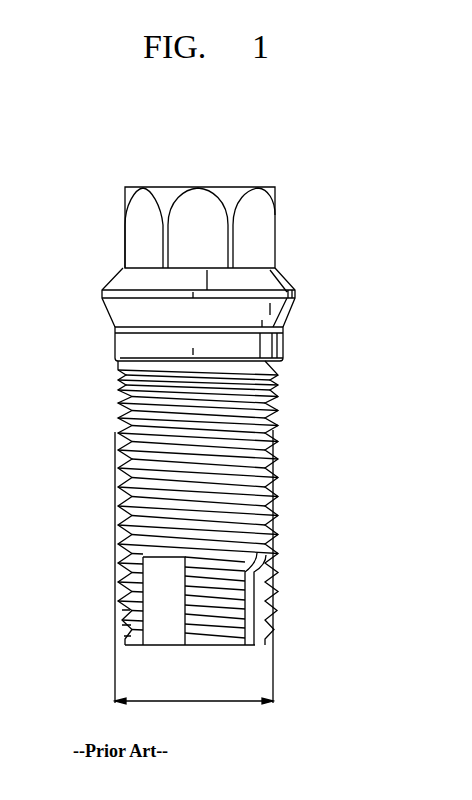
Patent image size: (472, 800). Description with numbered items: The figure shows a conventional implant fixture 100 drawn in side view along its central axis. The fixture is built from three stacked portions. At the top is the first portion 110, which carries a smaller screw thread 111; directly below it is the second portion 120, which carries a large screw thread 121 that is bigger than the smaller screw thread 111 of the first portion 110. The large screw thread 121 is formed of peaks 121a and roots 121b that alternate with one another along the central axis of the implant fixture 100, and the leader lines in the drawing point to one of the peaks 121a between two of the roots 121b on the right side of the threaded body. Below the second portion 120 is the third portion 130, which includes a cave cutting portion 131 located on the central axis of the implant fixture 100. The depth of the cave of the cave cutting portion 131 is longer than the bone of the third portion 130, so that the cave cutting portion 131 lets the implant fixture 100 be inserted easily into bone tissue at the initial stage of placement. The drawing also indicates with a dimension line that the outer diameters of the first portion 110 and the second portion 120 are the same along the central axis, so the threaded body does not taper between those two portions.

The implant fixture 100 is at (333, 189).
The first portion 110 is at (285, 372).
The smaller screw thread 111 is at (120, 365).
The second portion 120 is at (289, 508).
The large screw thread 121 is at (118, 503).
The peaks 121a is at (277, 459).
The roots 121b is at (277, 445).
The third portion 130 is at (288, 610).
The cave cutting portion 131 is at (122, 607).